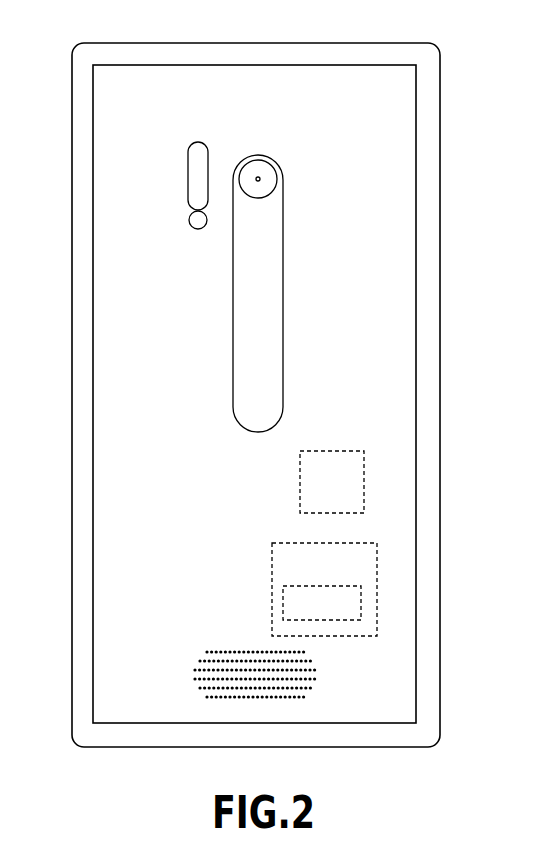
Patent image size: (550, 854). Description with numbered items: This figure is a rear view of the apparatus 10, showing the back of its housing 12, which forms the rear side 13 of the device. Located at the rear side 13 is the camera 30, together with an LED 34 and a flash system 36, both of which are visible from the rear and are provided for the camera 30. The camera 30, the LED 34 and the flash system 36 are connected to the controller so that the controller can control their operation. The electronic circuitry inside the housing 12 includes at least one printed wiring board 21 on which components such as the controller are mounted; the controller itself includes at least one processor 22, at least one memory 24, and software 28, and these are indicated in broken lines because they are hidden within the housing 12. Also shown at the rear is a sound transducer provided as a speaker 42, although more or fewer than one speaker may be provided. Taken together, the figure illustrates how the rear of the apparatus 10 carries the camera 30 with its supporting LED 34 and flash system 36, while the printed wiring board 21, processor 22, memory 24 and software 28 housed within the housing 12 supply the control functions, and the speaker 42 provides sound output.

The apparatus 10 is at (473, 110).
The housing 12 is at (425, 288).
The rear side 13 is at (402, 376).
The printed wiring board 21 is at (395, 519).
The processor 22 is at (364, 470).
The memory 24 is at (377, 558).
The software 28 is at (357, 607).
The camera 30 is at (268, 176).
The LED 34 is at (190, 222).
The flash system 36 is at (196, 186).
The speaker 42 is at (290, 682).